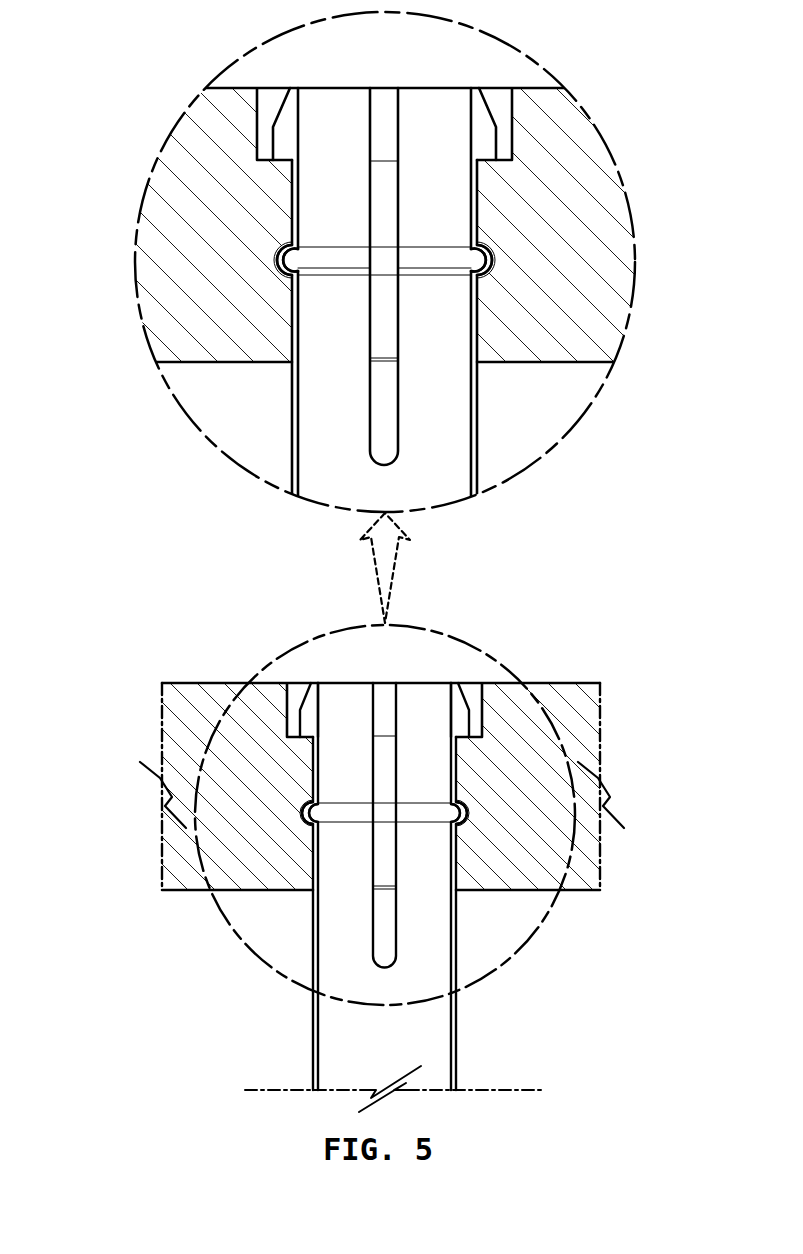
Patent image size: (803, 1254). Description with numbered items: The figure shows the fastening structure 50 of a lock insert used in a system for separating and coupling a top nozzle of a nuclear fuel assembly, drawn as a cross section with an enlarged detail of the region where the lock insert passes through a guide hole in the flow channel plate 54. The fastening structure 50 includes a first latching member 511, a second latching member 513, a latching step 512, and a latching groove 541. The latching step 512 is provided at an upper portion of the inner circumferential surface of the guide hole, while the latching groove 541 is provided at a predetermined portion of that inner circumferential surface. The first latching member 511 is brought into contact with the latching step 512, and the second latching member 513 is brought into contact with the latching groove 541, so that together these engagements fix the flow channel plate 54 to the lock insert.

The fastening structure 50 is at (590, 618).
The flow channel plate 54 is at (615, 333).
The latching groove 541 is at (493, 258).
The first latching member 511 is at (285, 135).
The latching step 512 is at (467, 727).
The second latching member 513 is at (299, 258).